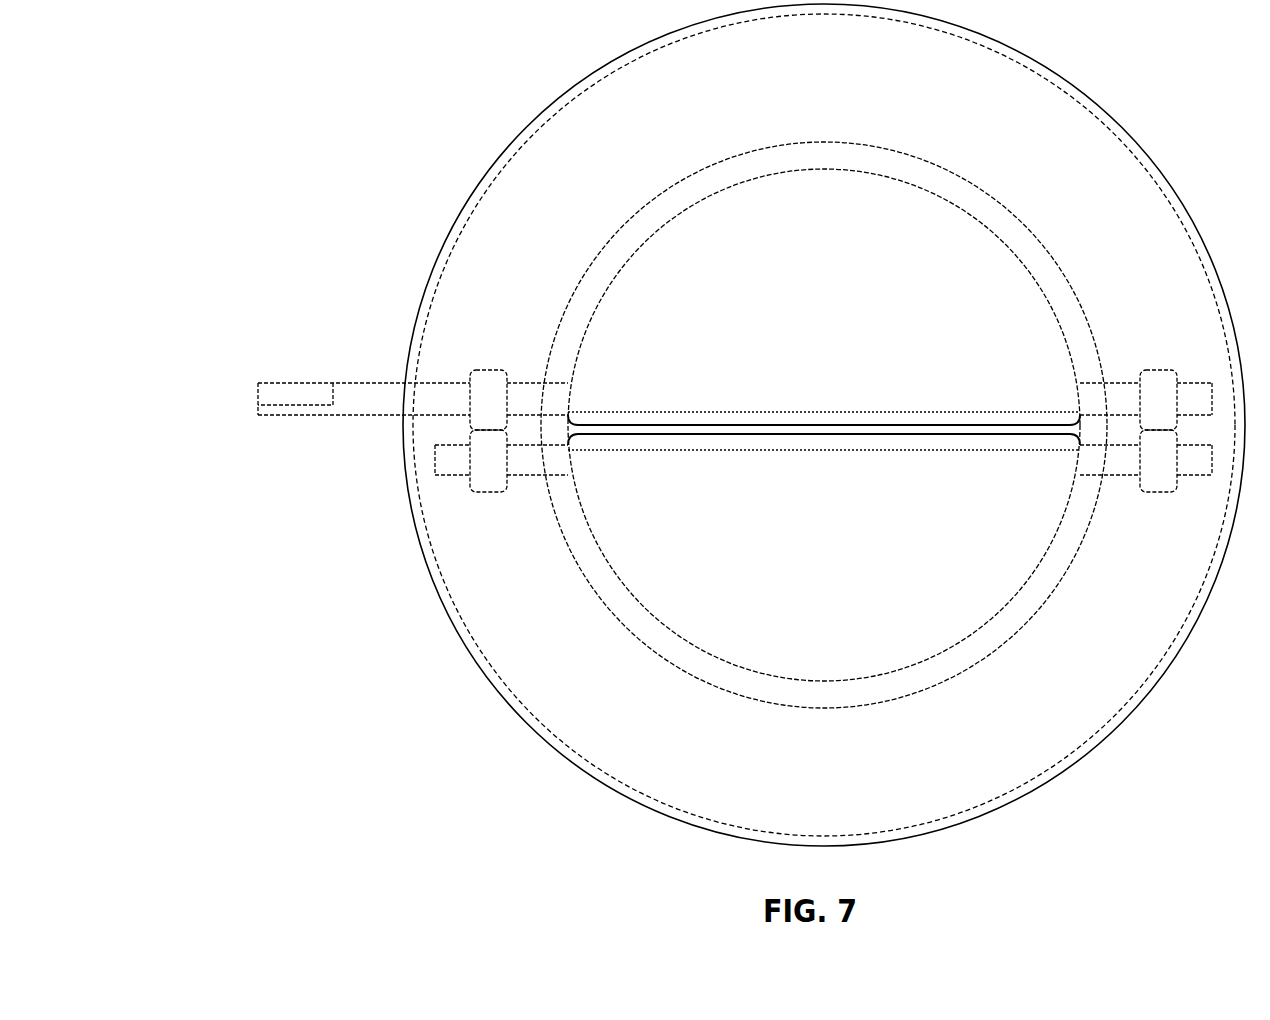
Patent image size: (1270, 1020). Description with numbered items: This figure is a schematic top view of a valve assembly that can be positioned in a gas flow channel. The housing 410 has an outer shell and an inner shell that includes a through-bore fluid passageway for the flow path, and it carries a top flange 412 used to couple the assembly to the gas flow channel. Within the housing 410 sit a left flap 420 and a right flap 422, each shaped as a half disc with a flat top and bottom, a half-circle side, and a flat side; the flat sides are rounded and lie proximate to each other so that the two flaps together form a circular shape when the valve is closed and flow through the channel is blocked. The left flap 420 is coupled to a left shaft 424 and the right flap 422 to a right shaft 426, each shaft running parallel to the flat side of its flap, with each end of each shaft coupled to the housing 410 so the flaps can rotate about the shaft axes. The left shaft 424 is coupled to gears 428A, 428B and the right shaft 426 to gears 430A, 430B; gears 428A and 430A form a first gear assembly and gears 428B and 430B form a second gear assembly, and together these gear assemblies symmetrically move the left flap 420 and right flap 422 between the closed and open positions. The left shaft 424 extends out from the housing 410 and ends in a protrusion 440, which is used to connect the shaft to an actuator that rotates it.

The housing 410 is at (429, 306).
The top flange 412 is at (518, 186).
The left flap 420 is at (1000, 283).
The right flap 422 is at (1023, 553).
The left shaft 424 is at (358, 405).
The right shaft 426 is at (424, 466).
The gear 428A is at (493, 374).
The gear 428B is at (1157, 376).
The gear 430A is at (490, 482).
The gear 430B is at (1162, 482).
The protrusion 440 is at (273, 392).